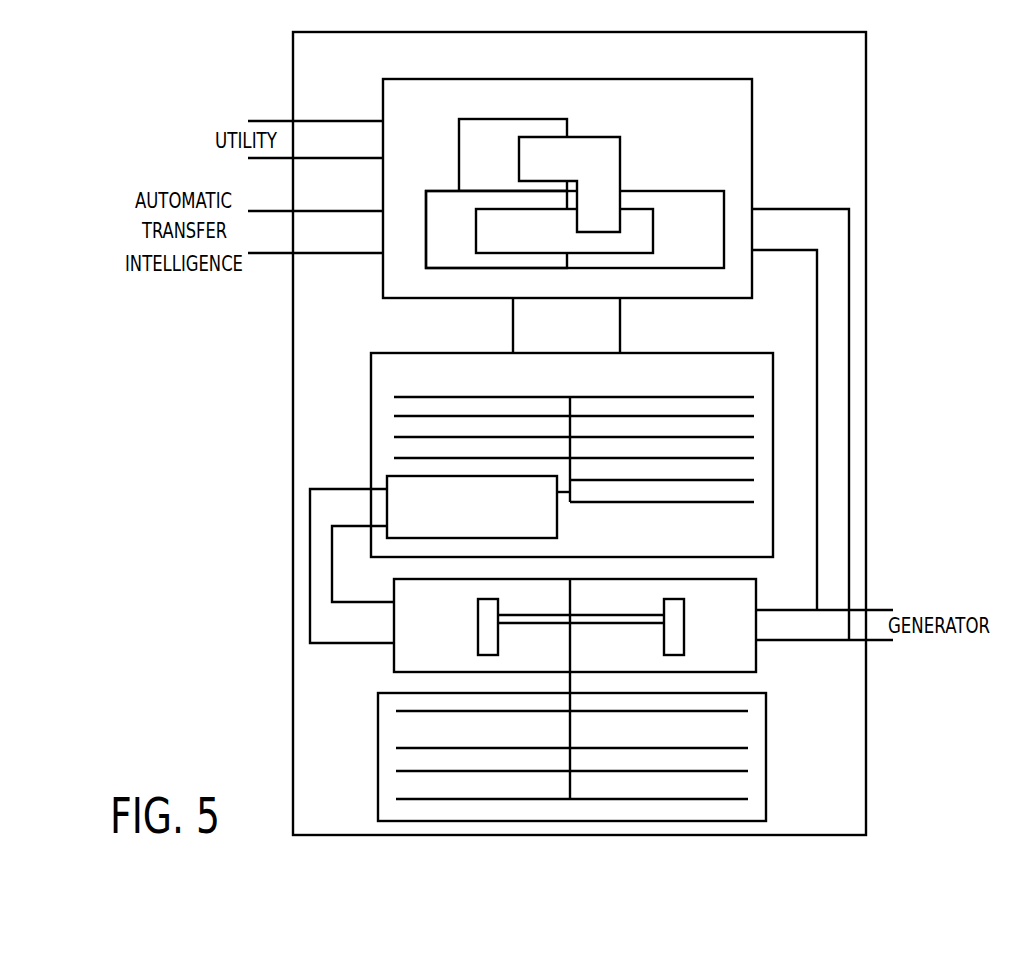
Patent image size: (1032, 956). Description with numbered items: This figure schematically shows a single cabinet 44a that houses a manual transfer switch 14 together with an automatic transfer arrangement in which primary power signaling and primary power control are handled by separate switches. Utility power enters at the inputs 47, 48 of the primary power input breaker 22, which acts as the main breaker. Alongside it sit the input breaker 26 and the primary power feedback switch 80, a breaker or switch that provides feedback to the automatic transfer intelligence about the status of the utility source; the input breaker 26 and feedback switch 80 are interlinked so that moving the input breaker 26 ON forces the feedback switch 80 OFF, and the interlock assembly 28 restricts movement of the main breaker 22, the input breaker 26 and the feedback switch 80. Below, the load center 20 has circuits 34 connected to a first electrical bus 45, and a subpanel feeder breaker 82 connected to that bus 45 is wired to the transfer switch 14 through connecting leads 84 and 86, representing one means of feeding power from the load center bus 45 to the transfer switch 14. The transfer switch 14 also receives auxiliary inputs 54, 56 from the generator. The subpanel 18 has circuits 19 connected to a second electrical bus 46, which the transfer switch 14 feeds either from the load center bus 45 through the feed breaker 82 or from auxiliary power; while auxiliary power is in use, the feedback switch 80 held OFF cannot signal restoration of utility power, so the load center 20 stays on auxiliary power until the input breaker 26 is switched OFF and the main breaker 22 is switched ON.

The cabinet 44a is at (866, 76).
The input of the primary power input breaker 47 is at (315, 122).
The input of the primary power input breaker 48 is at (315, 159).
The primary power input breaker 22 is at (512, 119).
The interlock assembly 28 is at (620, 152).
The input breaker 26 is at (672, 191).
The primary power feedback switch 80 is at (446, 191).
The load center 20 is at (747, 371).
The first electrical bus 45 is at (568, 400).
The circuits 34 is at (653, 415).
The subpanel feeder breaker 82 is at (387, 482).
The connecting lead 84 is at (365, 602).
The connecting lead 86 is at (362, 643).
The transfer switch 14 is at (402, 651).
The auxiliary input of the transfer switch 54 is at (780, 610).
The auxiliary input of the transfer switch 56 is at (827, 641).
The subpanel 18 is at (382, 791).
The circuits 19 is at (596, 712).
The second electrical bus 46 is at (570, 722).